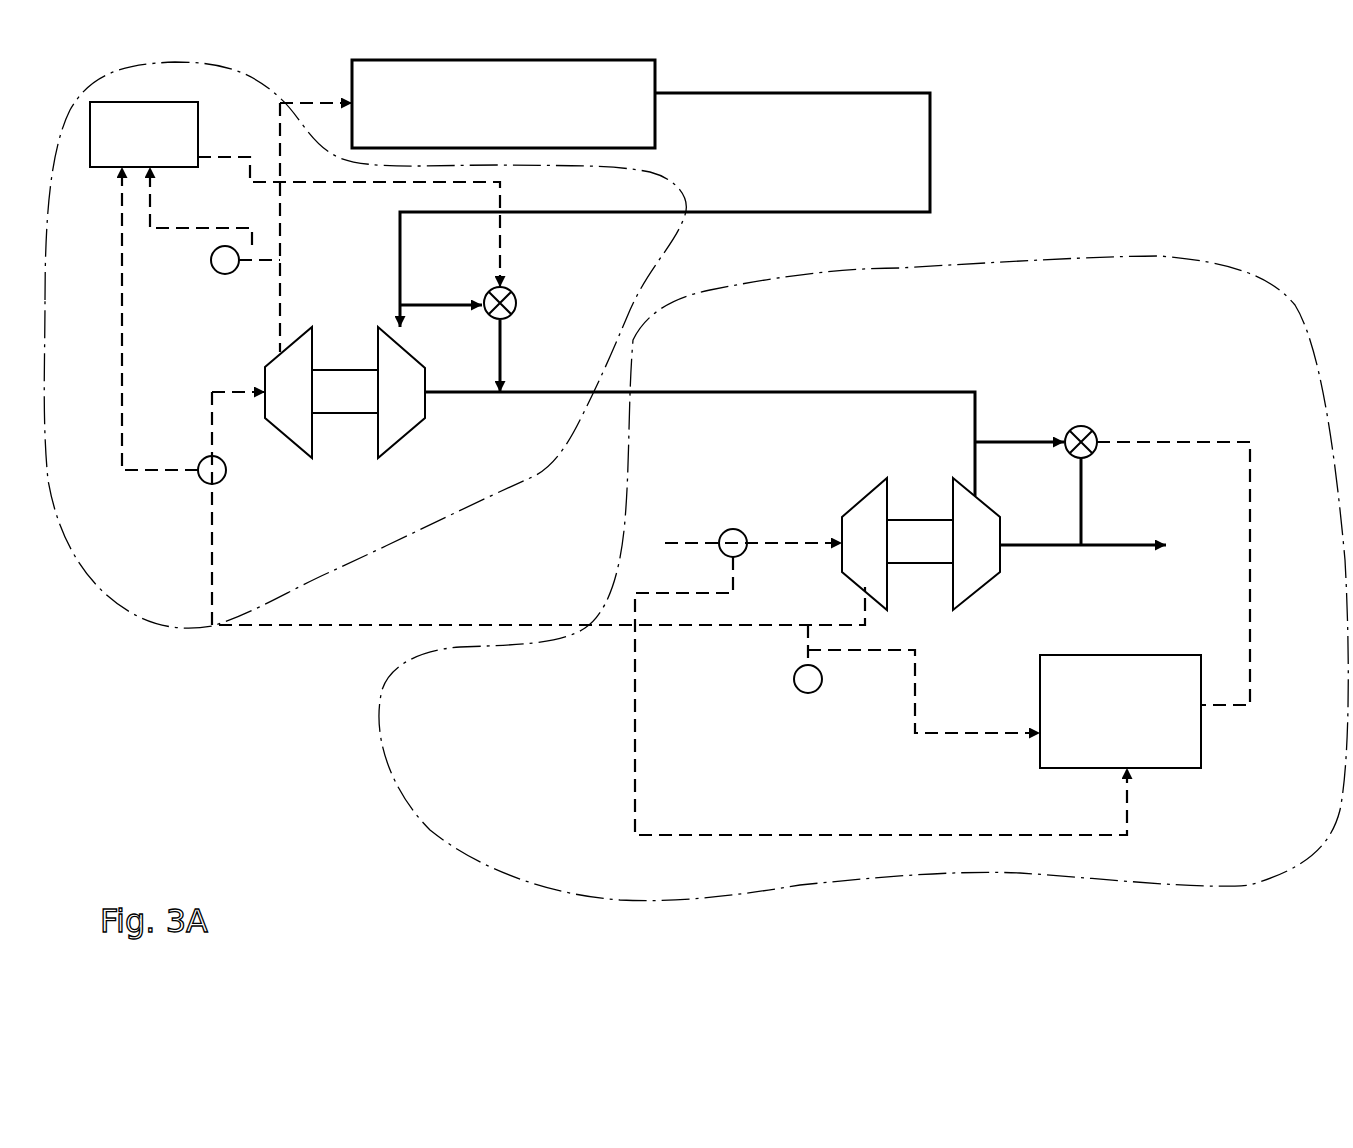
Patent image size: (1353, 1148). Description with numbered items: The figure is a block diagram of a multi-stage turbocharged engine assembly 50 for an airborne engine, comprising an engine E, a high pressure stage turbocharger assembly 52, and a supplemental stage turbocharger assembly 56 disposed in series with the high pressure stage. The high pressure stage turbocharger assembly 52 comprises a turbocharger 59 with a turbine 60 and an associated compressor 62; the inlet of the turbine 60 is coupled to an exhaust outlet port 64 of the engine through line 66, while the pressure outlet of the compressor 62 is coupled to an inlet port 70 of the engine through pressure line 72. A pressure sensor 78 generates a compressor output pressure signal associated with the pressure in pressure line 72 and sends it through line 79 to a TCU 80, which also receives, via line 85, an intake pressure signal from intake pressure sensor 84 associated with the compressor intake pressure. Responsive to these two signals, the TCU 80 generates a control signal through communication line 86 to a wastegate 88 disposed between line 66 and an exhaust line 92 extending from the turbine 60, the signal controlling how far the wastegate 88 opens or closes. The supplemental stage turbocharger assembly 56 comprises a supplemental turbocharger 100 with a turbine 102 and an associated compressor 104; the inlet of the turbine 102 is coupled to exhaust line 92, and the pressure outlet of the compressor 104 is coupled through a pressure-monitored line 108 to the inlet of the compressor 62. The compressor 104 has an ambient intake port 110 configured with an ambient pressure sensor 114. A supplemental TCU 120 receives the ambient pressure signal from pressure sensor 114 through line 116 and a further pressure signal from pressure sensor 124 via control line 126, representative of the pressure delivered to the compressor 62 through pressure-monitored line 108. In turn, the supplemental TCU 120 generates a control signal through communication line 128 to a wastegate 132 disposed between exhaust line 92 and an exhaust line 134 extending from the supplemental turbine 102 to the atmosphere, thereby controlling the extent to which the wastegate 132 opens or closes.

The multi-stage turbocharged engine assembly 50 is at (1000, 205).
The high pressure stage turbocharger assembly 52 is at (167, 627).
The supplemental stage turbocharger assembly 56 is at (395, 785).
The turbocharger 59 is at (360, 420).
The turbine 60 is at (410, 437).
The compressor 62 is at (292, 443).
The exhaust outlet port 64 is at (660, 93).
The line 66 is at (850, 93).
The inlet port 70 is at (346, 102).
The pressure line 72 is at (282, 217).
The pressure sensor 78 is at (223, 275).
The line 79 is at (188, 228).
The TCU (Turbocharger Control Unit) 80 is at (150, 102).
The intake pressure sensor 84 is at (206, 456).
The line 85 is at (122, 314).
The communication line 86 is at (497, 249).
The wastegate 88 is at (511, 290).
The exhaust line 92 is at (560, 397).
The supplemental turbocharger 100 is at (901, 519).
The turbine 102 is at (985, 587).
The compressor 104 is at (848, 577).
The pressure-monitored line 108 is at (385, 627).
The ambient intake port 110 is at (795, 543).
The ambient pressure sensor 114 is at (732, 528).
The line 116 is at (800, 835).
The supplemental TCU (Turbocharger Control Unit) 120 is at (1201, 745).
The pressure sensor 124 is at (800, 692).
The control line 126 is at (914, 700).
The communication line 128 is at (1250, 567).
The wastegate 132 is at (1092, 425).
The exhaust line 134 is at (1100, 547).